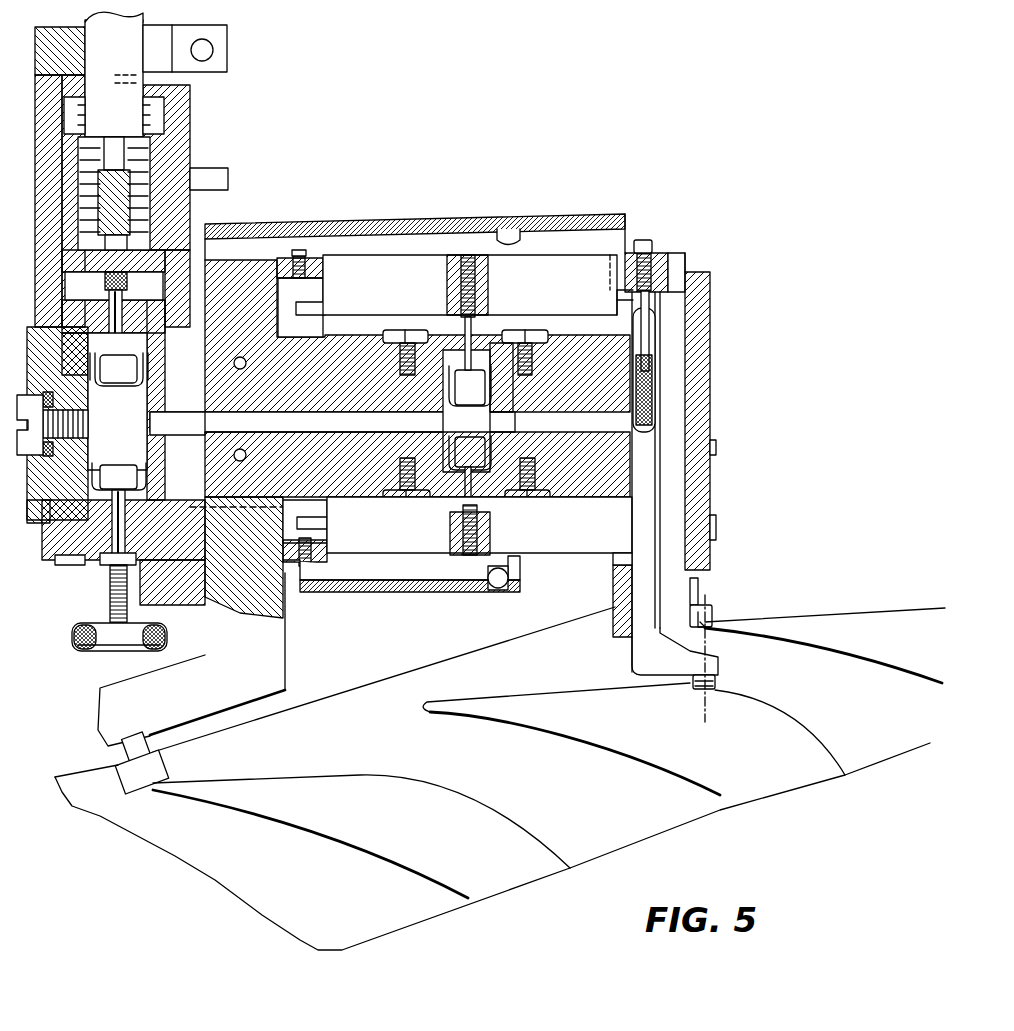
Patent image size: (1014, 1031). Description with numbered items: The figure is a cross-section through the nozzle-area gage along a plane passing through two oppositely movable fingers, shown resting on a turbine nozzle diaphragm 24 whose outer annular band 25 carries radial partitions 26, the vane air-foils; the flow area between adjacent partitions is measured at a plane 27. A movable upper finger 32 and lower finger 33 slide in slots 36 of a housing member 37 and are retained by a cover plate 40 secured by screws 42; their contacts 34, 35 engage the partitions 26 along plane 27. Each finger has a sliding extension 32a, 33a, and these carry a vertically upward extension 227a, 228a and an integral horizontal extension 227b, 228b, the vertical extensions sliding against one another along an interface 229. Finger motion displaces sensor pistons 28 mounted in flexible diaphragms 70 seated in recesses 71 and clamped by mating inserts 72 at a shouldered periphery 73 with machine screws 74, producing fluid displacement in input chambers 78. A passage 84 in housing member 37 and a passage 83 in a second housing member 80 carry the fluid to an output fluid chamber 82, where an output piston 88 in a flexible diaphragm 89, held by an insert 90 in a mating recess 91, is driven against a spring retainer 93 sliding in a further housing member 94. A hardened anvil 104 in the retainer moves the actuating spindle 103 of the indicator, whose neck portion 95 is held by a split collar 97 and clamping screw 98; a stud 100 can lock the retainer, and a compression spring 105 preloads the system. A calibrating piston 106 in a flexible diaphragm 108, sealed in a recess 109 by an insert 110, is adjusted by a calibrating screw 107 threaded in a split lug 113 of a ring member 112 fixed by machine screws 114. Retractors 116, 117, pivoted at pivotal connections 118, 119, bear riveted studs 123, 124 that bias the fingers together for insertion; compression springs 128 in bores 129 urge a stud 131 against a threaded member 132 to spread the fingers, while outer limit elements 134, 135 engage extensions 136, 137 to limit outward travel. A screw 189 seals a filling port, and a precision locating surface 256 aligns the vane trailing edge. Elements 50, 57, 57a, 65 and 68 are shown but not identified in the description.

The turbine nozzle diaphragm 24 is at (60, 766).
The outer annular band 25 is at (266, 903).
The radial partitions 26 is at (213, 805).
The plane 27 is at (707, 717).
The sensor pistons 28 is at (470, 418).
The upper fingers 32 is at (680, 582).
The sliding extension 32a is at (713, 458).
The lower fingers 33 is at (643, 674).
The sliding extension 33a is at (694, 568).
The contacts 34 is at (708, 622).
The contacts 35 is at (700, 690).
The slot 36 is at (705, 402).
The housing member 37 is at (589, 466).
The cover plate 40 is at (708, 290).
The screws 42 is at (715, 445).
The upper block 50 is at (615, 455).
The support plate 57 is at (283, 640).
The locating block 57a is at (158, 772).
The lower adjusting screw mount 65 is at (452, 540).
The upper chamber 68 is at (447, 291).
The flexible diaphragms 70 is at (480, 505).
The recesses 71 is at (467, 500).
The mating inserts 72 is at (500, 455).
The shouldered periphery 73 is at (540, 332).
The machine screws 74 is at (462, 323).
The input chambers 78 is at (332, 411).
The second housing member 80 is at (40, 525).
The output fluid chamber 82 is at (117, 401).
The passage 83 is at (177, 423).
The passage 84 is at (322, 432).
The output piston 88 is at (119, 369).
The flexible diaphragm 89 is at (108, 388).
The insert 90 is at (128, 300).
The mating recess 91 is at (197, 343).
The spring retainer 93 is at (160, 232).
The further housing member 94 is at (190, 100).
The neck portion 95 is at (140, 65).
The split collar 97 is at (227, 33).
The clamping screw 98 is at (213, 50).
The stud 100 is at (224, 178).
The actuating spindle 103 is at (172, 198).
The hardened anvil 104 is at (106, 286).
The compression spring 105 is at (150, 110).
The calibrating piston 106 is at (119, 477).
The calibrating screw 107 is at (98, 652).
The flexible diaphragm 108 is at (128, 463).
The recess 109 is at (198, 503).
The insert 110 is at (104, 555).
The ring member 112 is at (62, 563).
The split lug 113 is at (108, 600).
The machine screws 114 is at (100, 565).
The retractor 116 is at (472, 228).
The retractor 117 is at (443, 592).
The pivotal connection 118 is at (247, 363).
The pivotal connection 119 is at (247, 455).
The riveted studs 123 is at (500, 238).
The riveted studs 124 is at (510, 575).
The compression springs 128 is at (657, 365).
The bore 129 is at (657, 385).
The stud 131 is at (628, 300).
The threaded member 132 is at (652, 243).
The outer limit element 134 is at (300, 255).
The outer limit element 135 is at (312, 563).
The extension 136 is at (315, 305).
The extension 137 is at (313, 520).
The screw 189 is at (90, 414).
The vertically upward extension 227a is at (675, 420).
The horizontal extension 227b is at (556, 272).
The vertically upward extension 228a is at (658, 502).
The horizontal extension 228b is at (479, 525).
The interface 229 is at (672, 478).
The precision locating surface 256 is at (700, 600).